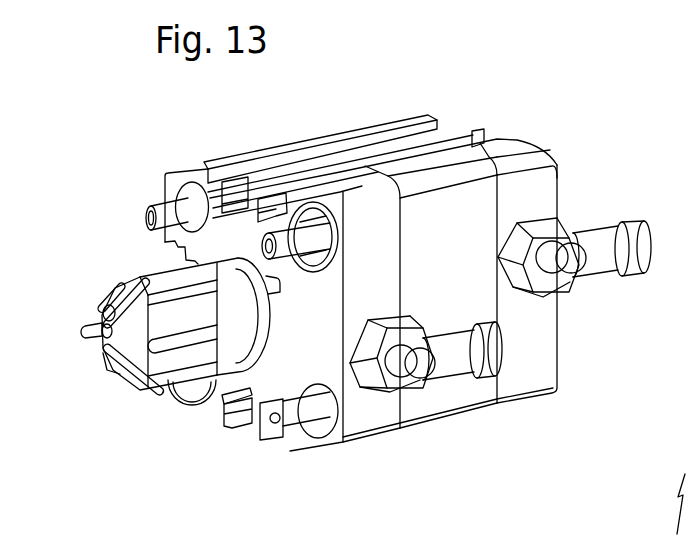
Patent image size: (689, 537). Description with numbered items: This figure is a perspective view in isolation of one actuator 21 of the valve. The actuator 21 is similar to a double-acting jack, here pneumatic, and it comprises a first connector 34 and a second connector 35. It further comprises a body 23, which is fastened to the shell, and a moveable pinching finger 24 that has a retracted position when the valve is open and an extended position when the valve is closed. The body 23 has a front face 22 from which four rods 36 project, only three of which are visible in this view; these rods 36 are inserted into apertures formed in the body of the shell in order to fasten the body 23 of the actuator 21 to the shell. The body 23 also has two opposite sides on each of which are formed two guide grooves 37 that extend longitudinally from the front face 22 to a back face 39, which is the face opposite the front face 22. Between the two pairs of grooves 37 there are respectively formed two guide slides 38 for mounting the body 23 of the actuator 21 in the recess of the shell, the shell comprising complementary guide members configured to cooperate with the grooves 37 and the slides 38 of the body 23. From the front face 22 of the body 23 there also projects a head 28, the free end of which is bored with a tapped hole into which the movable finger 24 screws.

The actuator 21 is at (455, 84).
The front face 22 is at (322, 367).
The body 23 is at (314, 148).
The moveable pinching finger 24 is at (87, 290).
The head 28 is at (270, 313).
The first connector 34 is at (616, 233).
The second connector 35 is at (459, 372).
The rods 36 is at (266, 241).
The guide grooves 37 is at (228, 198).
The guide slides 38 is at (256, 200).
The back face 39 is at (557, 176).